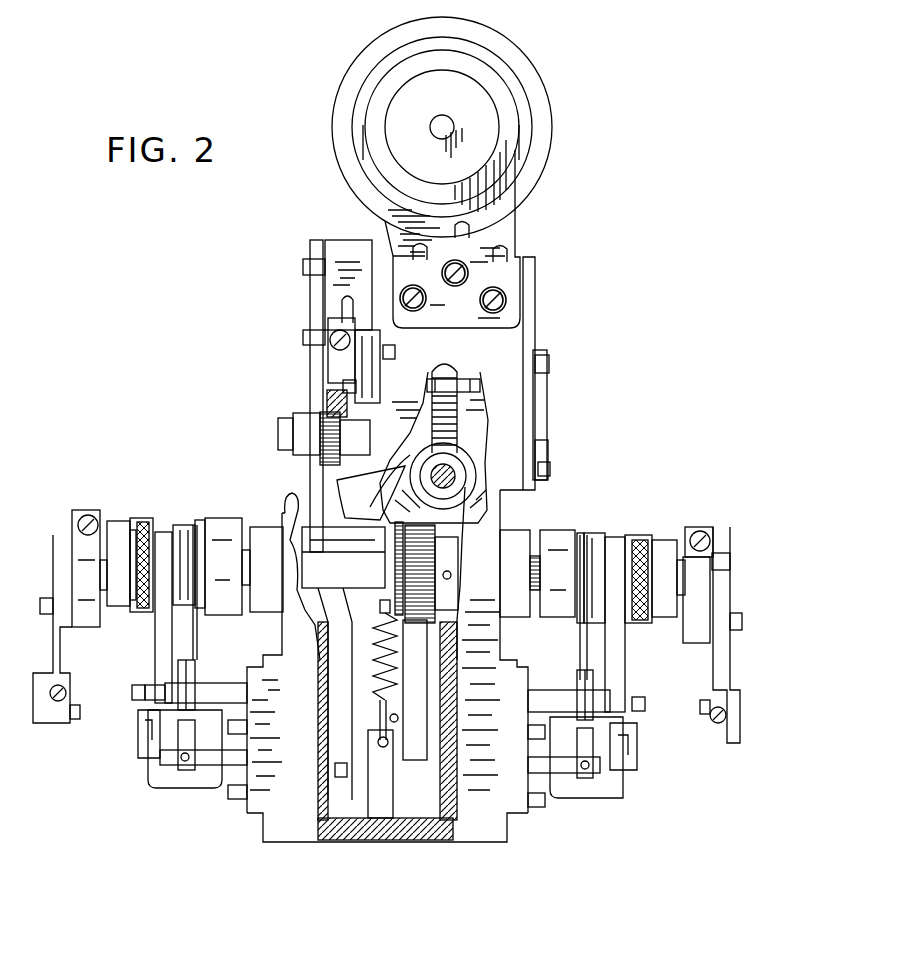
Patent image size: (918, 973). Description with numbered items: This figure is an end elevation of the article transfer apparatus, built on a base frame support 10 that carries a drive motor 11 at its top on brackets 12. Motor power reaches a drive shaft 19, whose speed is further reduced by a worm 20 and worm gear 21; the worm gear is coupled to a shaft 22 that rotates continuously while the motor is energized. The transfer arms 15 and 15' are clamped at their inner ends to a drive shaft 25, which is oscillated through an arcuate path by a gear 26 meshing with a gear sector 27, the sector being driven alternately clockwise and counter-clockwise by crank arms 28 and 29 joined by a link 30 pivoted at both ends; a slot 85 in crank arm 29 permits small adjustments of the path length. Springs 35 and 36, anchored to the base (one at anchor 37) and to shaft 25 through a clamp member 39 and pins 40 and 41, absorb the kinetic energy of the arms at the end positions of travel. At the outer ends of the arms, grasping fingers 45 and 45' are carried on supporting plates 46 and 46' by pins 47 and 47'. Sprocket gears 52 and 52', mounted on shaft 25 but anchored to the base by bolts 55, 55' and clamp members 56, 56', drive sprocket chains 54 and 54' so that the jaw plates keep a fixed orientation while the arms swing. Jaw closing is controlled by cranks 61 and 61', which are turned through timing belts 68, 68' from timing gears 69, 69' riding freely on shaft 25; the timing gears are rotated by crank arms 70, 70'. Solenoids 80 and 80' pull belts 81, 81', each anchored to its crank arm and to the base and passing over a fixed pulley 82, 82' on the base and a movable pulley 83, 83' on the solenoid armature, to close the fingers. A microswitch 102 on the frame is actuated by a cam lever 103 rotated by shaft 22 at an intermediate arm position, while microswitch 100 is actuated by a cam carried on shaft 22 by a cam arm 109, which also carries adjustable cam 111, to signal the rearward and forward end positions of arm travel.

The base frame support 10 is at (285, 835).
The drive motor 11 is at (545, 157).
The brackets 12 is at (505, 232).
The transfer arm 15 is at (223, 548).
The transfer arm 15' is at (537, 555).
The drive shaft 19 is at (455, 476).
The worm 20 is at (478, 448).
The worm gear 21 is at (450, 372).
The shaft 22 is at (395, 352).
The drive shaft 25 is at (117, 521).
The gear 26 is at (430, 560).
The gear sector 27 is at (437, 600).
The crank arm 28 is at (400, 716).
The crank arm 29 is at (330, 362).
The link 30 is at (308, 478).
The spring 35 is at (345, 705).
The spring 36 is at (385, 555).
The spring anchor 37 is at (390, 805).
The clamp member 39 is at (398, 578).
The pin 40 is at (383, 612).
The pin 41 is at (375, 515).
The grasping finger 45 is at (53, 629).
The grasping finger 45' is at (740, 635).
The supporting plate 46 is at (71, 503).
The supporting plate 46' is at (723, 527).
The pin 47 is at (38, 623).
The pin 47' is at (756, 613).
The sprocket gear 52 is at (127, 582).
The sprocket gear 52' is at (679, 555).
The sprocket chain 54 is at (146, 544).
The sprocket chain 54' is at (645, 562).
The bolt 55 is at (118, 699).
The bolt 55' is at (654, 700).
The clamp member 56 is at (137, 645).
The clamp member 56' is at (641, 653).
The crank 61 is at (65, 560).
The crank 61' is at (731, 548).
The timing belt 68 is at (187, 547).
The timing belt 68' is at (606, 557).
The timing gear 69 is at (215, 580).
The timing gear 69' is at (582, 562).
The crank arm 70 is at (213, 594).
The crank arm 70' is at (558, 607).
The solenoid 80 is at (197, 766).
The solenoid 80' is at (598, 762).
The belt 81 is at (174, 687).
The belt 81' is at (569, 686).
The pulley 82 is at (148, 682).
The pulley 82' is at (615, 692).
The movable pulley 83 is at (180, 752).
The movable pulley 83' is at (602, 753).
The slot 85 is at (327, 403).
The microswitch 100 is at (325, 292).
The microswitch 102 is at (548, 468).
The cam lever 103 is at (548, 390).
The cam arm 109 is at (368, 367).
The adjustable cam 111 is at (343, 387).